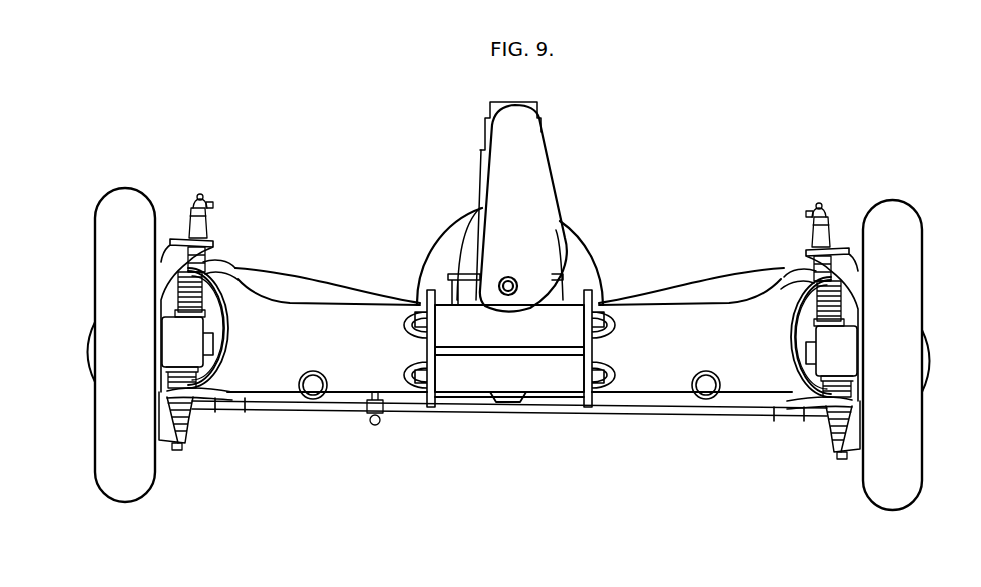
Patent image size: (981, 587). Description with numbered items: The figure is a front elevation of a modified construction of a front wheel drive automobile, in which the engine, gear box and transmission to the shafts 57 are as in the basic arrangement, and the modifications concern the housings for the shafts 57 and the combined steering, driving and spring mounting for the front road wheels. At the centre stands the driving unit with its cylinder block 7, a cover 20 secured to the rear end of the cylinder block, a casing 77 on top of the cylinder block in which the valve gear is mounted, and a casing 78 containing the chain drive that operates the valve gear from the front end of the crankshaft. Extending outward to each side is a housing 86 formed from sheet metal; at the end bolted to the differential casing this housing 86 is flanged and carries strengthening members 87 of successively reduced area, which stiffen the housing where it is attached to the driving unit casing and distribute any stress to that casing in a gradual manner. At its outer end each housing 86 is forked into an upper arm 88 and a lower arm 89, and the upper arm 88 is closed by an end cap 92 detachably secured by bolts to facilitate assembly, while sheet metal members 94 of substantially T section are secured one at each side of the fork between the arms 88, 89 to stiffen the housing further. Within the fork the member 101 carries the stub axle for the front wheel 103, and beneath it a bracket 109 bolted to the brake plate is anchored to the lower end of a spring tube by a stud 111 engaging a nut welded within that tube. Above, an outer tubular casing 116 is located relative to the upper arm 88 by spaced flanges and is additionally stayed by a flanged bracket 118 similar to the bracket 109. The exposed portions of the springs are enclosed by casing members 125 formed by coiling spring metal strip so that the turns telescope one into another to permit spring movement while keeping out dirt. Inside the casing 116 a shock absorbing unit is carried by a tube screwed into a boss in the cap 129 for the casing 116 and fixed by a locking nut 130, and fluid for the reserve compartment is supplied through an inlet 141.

The cylinder block 7 is at (480, 186).
The cover 20 is at (578, 240).
The shafts 57 is at (213, 337).
The casing 77 is at (516, 105).
The casing 78 is at (523, 208).
The housing 86 is at (305, 320).
The strengthening members 87 is at (383, 375).
The upper arm 88 is at (218, 268).
The lower arm 89 is at (193, 394).
The end cap 92 is at (190, 262).
The sheet metal members 94 is at (222, 366).
The member 101 is at (509, 346).
The front wheel 103 is at (138, 464).
The bracket 109 is at (162, 428).
The stud 111 is at (836, 458).
The outer tubular casing 116 is at (207, 222).
The bracket 118 is at (177, 260).
The casing members 125 is at (186, 296).
The cap 129 is at (196, 205).
The locking nut 130 is at (201, 200).
The inlet 141 is at (214, 205).